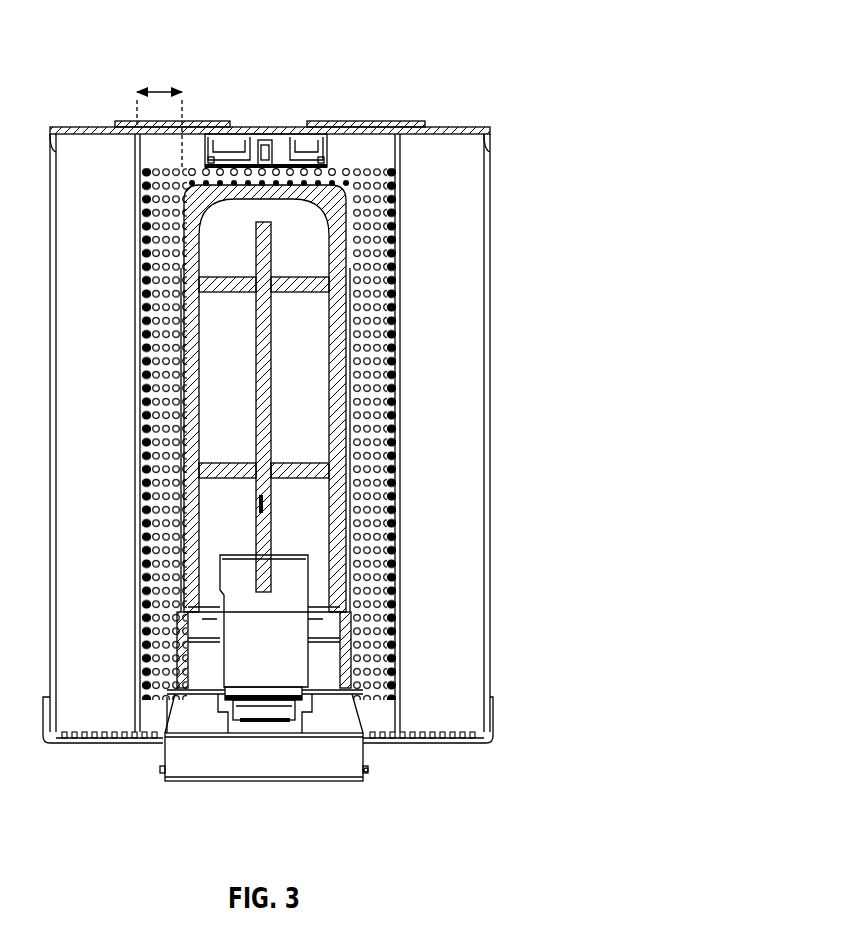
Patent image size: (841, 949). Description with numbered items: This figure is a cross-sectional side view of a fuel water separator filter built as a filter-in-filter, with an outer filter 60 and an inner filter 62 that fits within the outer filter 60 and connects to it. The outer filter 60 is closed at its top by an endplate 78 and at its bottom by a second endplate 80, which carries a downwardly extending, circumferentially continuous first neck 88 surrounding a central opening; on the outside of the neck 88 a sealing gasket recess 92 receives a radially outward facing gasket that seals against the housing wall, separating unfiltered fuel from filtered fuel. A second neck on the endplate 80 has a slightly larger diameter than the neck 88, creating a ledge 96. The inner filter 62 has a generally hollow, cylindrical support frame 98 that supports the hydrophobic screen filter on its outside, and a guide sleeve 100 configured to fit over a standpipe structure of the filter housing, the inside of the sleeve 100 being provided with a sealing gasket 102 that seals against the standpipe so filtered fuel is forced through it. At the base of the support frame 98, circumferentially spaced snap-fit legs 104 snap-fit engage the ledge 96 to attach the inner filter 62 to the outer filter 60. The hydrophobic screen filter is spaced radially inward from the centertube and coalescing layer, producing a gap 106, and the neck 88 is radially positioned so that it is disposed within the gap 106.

The outer filter 60 is at (458, 279).
The endplate 78 is at (430, 127).
The gap 106 is at (160, 92).
The support frame 98 is at (187, 250).
The inner filter 62 is at (290, 515).
The guide sleeve 100 is at (185, 668).
The snap-fit legs 104 is at (371, 714).
The second endplate 80 is at (447, 742).
The first neck 88 is at (350, 756).
The ledge 96 is at (190, 735).
The sealing gasket 102 is at (245, 730).
The sealing gasket recess 92 is at (366, 775).